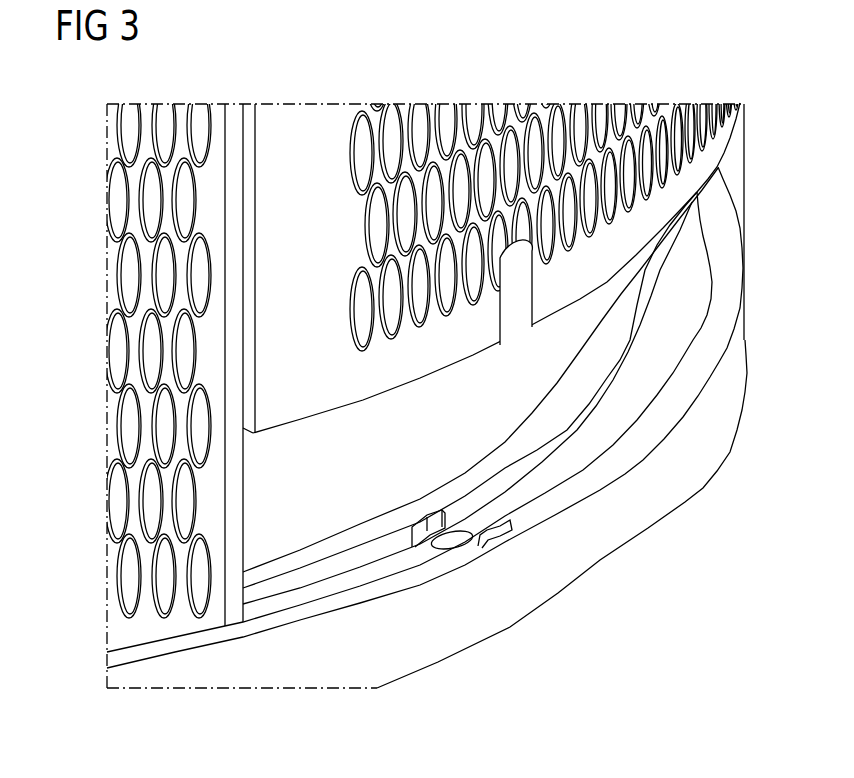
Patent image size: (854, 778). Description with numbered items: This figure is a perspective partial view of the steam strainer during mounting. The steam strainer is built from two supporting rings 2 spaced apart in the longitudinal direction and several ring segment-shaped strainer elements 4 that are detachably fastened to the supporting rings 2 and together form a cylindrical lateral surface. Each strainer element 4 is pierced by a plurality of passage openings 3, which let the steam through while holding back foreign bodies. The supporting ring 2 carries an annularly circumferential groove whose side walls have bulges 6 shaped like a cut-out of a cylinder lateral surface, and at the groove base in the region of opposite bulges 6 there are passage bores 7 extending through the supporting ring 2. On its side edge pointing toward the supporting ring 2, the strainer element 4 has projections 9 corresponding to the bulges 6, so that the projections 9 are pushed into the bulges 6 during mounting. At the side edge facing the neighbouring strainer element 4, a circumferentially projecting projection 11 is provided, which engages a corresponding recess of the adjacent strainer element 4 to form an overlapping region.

The supporting ring 2 is at (677, 483).
The passage openings 3 is at (161, 275).
The strainer element 4 is at (220, 96).
The bulge 6 is at (421, 512).
The passage bore 7 is at (452, 535).
The projection 9 is at (553, 440).
The projection 11 is at (246, 422).